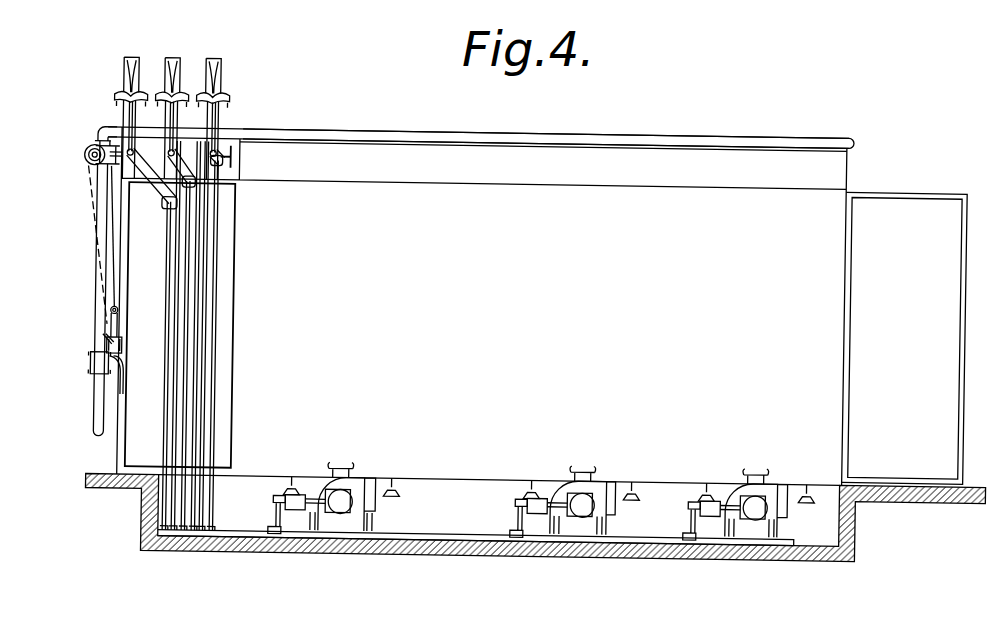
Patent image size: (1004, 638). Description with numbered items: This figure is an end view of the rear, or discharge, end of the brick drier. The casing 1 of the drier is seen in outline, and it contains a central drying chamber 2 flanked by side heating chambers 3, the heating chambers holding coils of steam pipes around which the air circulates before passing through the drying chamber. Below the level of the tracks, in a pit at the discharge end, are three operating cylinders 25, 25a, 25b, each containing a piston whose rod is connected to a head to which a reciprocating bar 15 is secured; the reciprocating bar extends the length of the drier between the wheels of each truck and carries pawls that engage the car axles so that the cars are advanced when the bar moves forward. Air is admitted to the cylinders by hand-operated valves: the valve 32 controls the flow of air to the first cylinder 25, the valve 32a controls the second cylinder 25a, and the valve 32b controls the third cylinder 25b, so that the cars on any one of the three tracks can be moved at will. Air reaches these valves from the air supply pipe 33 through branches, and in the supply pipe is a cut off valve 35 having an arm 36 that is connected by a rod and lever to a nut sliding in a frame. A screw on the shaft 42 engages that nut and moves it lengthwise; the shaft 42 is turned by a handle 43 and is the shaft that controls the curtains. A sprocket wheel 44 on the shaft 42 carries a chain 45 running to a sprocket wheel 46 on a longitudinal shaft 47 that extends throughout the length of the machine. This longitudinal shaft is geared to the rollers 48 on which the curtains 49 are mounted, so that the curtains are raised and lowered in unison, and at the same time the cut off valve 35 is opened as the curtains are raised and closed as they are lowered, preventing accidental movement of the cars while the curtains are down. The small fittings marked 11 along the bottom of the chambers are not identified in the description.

The casing 1 is at (536, 479).
The central drying chamber 2 is at (478, 306).
The side heating chambers 3 is at (130, 281).
The outlet nozzles 11 is at (551, 475).
The reciprocating bar 15 is at (344, 471).
The operating cylinder 25 is at (322, 505).
The second cylinder 25a is at (563, 509).
The third cylinder 25b is at (735, 512).
The valve 32 is at (146, 121).
The valve 32a is at (175, 109).
The valve 32b is at (217, 105).
The air supply pipe 33 is at (98, 420).
The cut off valve 35 is at (91, 366).
The arm 36 is at (122, 384).
The shaft 42 is at (120, 352).
The handle 43 is at (118, 330).
The sprocket wheel 44 is at (107, 343).
The chain 45 is at (92, 240).
The sprocket wheel 46 is at (90, 168).
The longitudinal shaft 47 is at (90, 154).
The roller 48 is at (836, 168).
The curtains 49 is at (542, 198).